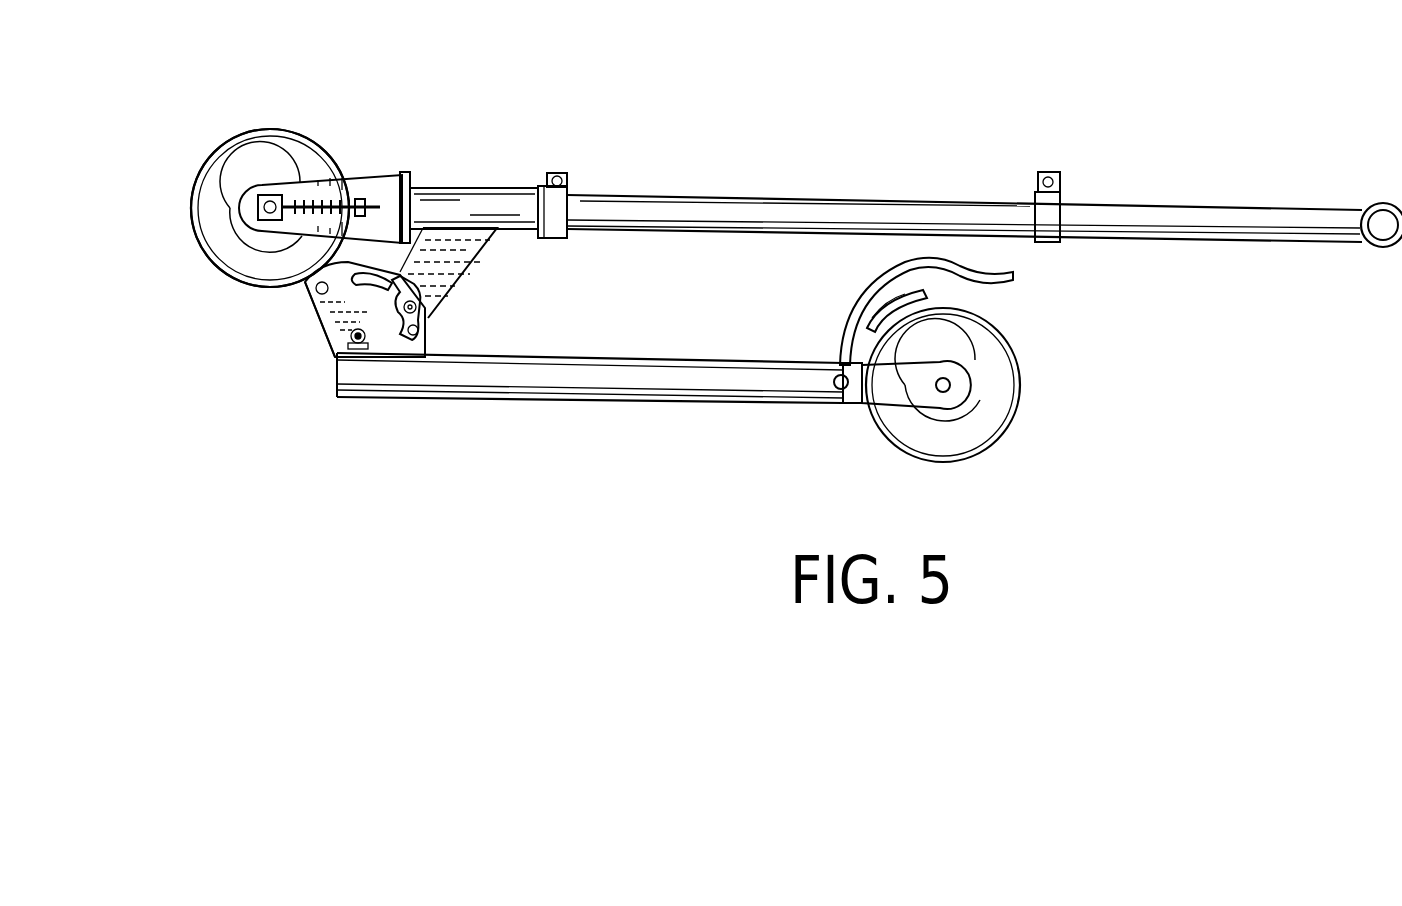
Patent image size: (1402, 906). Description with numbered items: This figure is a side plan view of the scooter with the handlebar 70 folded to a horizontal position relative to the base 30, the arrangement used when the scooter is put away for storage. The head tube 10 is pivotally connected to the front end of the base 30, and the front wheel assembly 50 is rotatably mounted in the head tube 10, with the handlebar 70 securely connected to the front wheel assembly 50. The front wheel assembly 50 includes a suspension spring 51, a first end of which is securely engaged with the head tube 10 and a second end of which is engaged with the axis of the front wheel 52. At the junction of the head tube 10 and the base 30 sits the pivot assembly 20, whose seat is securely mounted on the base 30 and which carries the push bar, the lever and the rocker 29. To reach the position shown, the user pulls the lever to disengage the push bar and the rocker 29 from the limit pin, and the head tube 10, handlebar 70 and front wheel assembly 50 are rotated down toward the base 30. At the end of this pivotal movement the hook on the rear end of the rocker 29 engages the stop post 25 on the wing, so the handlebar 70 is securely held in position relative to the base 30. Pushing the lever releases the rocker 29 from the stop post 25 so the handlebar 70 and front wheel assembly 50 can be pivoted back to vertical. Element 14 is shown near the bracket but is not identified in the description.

The head tube 10 is at (472, 187).
The bracket plate 14 is at (335, 352).
The pivot assembly 20 is at (285, 345).
The stop post 25 is at (418, 355).
The rocker 29 is at (420, 310).
The base 30 is at (655, 388).
The front wheel assembly 50 is at (300, 120).
The suspension spring 51 is at (343, 188).
The front wheel 52 is at (190, 228).
The handlebar 70 is at (805, 197).